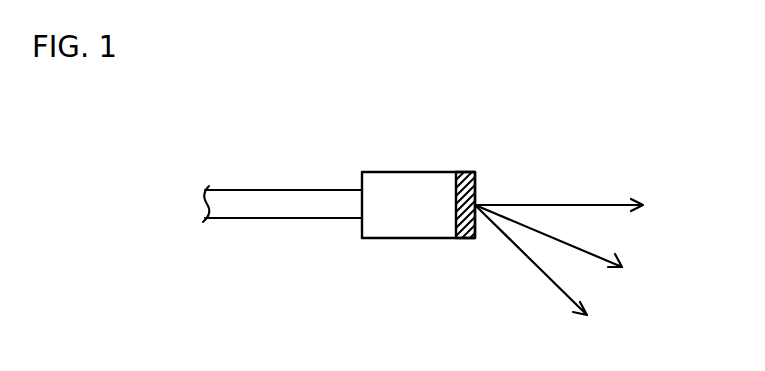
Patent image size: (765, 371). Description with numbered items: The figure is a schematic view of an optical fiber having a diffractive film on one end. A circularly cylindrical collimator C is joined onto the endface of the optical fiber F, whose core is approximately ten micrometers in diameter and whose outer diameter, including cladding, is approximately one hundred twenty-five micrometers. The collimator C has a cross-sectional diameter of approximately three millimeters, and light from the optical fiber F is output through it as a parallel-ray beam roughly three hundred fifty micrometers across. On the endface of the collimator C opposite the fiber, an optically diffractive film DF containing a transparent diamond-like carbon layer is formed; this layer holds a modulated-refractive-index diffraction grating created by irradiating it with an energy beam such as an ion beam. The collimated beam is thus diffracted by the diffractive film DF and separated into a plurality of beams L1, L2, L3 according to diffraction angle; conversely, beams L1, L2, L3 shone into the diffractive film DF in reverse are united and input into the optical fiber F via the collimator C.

The optical fiber F is at (285, 183).
The cylindrical collimator C is at (409, 168).
The diffractive film DF is at (472, 168).
The diffracted beam L1 is at (587, 210).
The diffracted beam L2 is at (575, 252).
The diffracted beam L3 is at (558, 282).